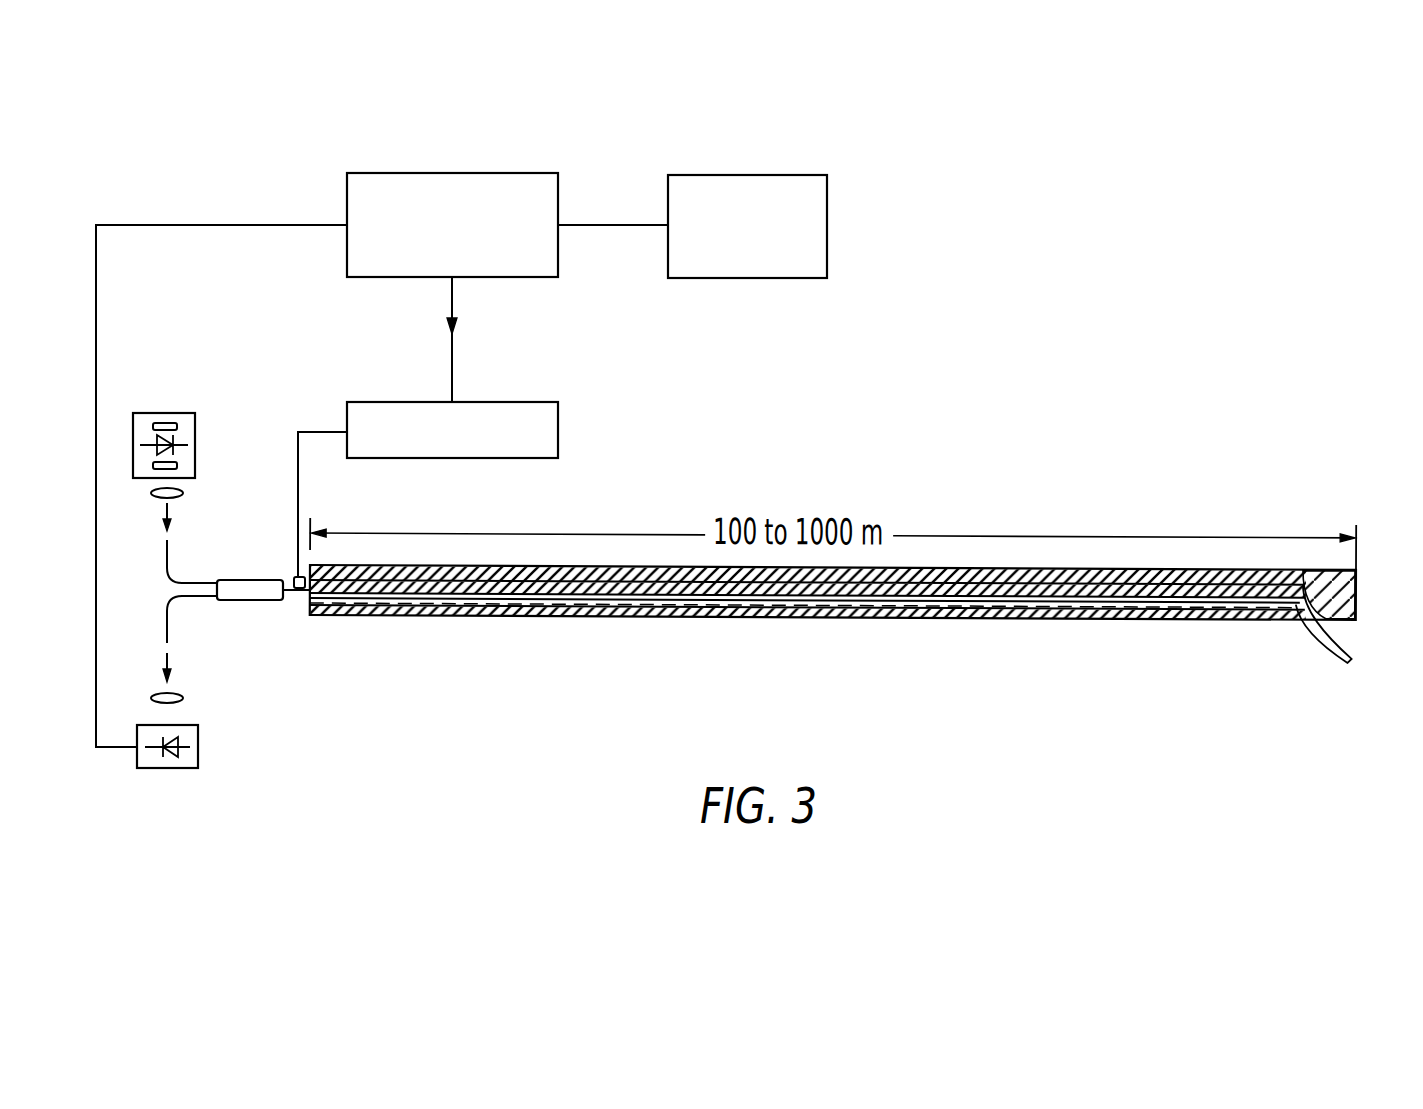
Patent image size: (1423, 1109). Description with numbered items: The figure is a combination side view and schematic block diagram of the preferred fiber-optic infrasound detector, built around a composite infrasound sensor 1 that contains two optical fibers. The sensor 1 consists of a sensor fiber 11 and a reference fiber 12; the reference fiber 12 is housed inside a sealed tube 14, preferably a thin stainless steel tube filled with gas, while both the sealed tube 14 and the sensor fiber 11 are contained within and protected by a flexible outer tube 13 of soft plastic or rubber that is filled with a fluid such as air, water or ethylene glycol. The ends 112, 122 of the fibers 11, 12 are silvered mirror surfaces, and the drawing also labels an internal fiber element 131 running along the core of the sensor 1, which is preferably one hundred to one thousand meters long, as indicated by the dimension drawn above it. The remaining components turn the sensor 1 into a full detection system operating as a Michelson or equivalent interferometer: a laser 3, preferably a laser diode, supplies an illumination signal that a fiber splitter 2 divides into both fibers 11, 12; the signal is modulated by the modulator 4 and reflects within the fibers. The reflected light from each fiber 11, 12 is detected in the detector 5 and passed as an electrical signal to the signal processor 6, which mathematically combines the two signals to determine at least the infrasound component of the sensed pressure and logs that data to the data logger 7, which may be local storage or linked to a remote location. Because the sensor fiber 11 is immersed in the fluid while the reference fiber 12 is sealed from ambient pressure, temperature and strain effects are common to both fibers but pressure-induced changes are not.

The infrasound sensor 1 is at (862, 631).
The fiber splitter 2 is at (258, 600).
The laser 3 is at (165, 423).
The modulator 4 is at (558, 430).
The detector 5 is at (198, 736).
The signal processor 6 is at (512, 277).
The data logger 7 is at (732, 278).
The sensor fiber 11 is at (535, 582).
The reference fiber 12 is at (722, 600).
The outer tube 13 is at (982, 606).
The sealed tube 14 is at (1080, 612).
The end of sensor fiber 112 is at (1356, 578).
The end of reference fiber 122 is at (1344, 632).
The optical fiber 131 is at (1284, 620).